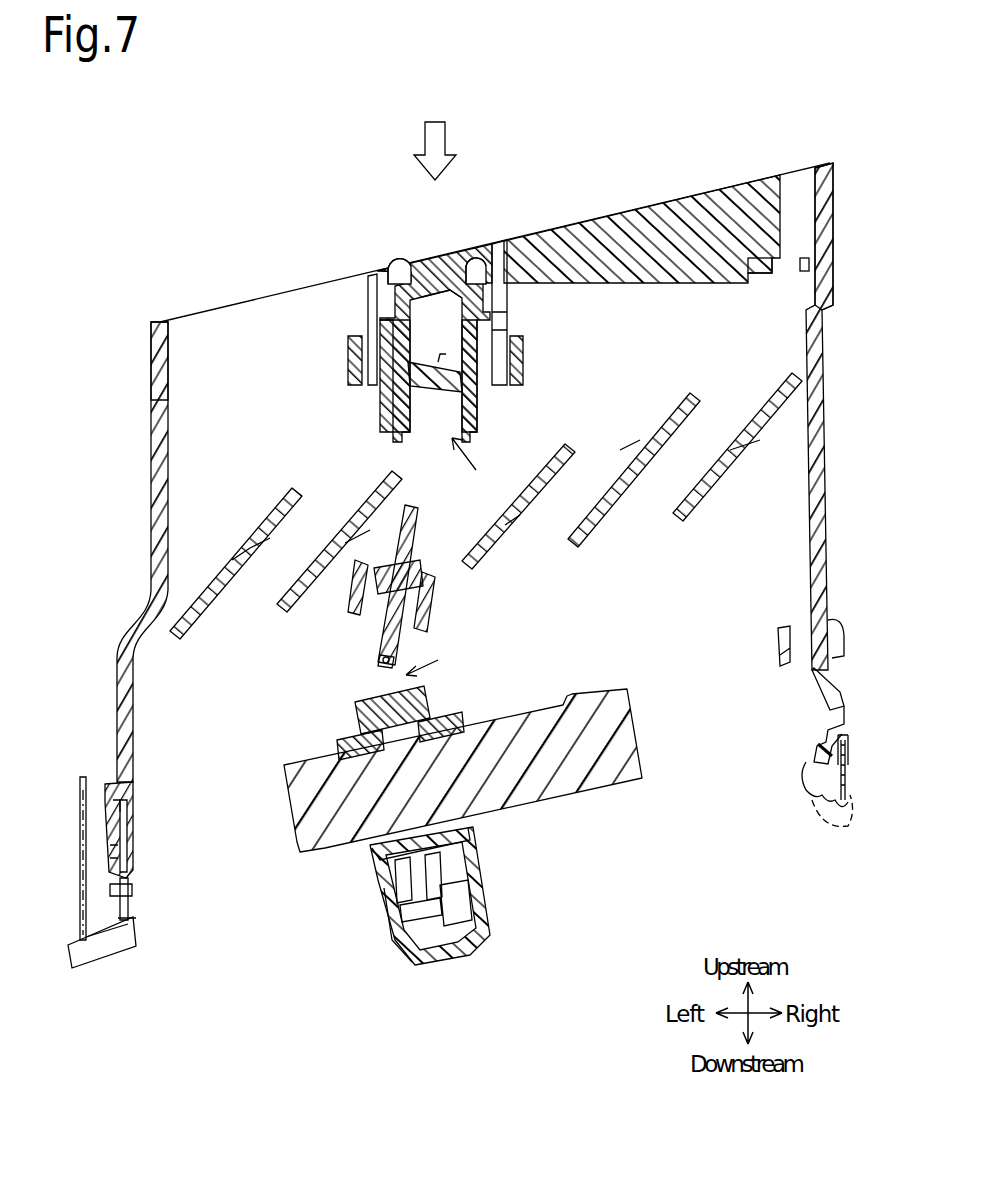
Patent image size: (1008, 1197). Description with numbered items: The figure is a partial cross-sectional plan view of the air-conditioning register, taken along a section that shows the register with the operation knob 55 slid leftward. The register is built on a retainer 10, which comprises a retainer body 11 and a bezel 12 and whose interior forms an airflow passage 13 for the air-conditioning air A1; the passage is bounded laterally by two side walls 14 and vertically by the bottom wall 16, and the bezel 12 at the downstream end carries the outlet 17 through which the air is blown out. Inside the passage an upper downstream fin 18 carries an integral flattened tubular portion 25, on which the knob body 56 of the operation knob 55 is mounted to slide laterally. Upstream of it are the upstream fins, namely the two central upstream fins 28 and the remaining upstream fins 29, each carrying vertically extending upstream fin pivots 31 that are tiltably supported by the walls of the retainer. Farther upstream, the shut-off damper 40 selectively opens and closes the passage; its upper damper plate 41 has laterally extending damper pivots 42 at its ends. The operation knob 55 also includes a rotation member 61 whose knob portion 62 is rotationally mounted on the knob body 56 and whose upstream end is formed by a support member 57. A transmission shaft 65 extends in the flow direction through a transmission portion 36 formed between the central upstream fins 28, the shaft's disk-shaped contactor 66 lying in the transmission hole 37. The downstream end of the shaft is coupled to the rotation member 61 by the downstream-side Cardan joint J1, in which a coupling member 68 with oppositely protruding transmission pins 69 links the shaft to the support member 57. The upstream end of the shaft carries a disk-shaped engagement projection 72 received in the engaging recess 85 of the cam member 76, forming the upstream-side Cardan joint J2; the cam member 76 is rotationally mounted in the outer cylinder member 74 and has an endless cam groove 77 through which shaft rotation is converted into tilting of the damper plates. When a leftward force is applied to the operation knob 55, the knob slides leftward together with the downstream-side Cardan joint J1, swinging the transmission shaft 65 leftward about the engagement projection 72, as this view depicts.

The retainer 10 is at (122, 552).
The retainer body 11 is at (158, 452).
The bezel 12 is at (98, 975).
The airflow passage 13 is at (814, 192).
The side walls 14 is at (158, 390).
The bottom wall 16 is at (190, 342).
The outlet 17 is at (152, 948).
The upper downstream fin 18 is at (468, 770).
The tubular portion 25 is at (584, 796).
The central upstream fins 28 is at (292, 608).
The upstream fins 29 is at (194, 628).
The upstream fin pivots 31 is at (268, 540).
The transmission portion 36 is at (432, 600).
The transmission hole 37 is at (360, 622).
The shut-off damper 40 is at (642, 203).
The upper damper plate 41 is at (626, 210).
The damper pivots 42 is at (762, 276).
The operation knob 55 is at (386, 948).
The knob body 56 is at (376, 862).
The support member 57 is at (418, 690).
The rotation member 61 is at (485, 896).
The knob portion 62 is at (486, 928).
The transmission shaft 65 is at (418, 510).
The contactor 66 is at (410, 576).
The coupling member 68 is at (378, 668).
The transmission pins 69 is at (322, 677).
The engagement projection 72 is at (440, 386).
The outer cylinder member 74 is at (505, 298).
The cam member 76 is at (440, 260).
The cam groove 77 is at (394, 278).
The engaging recess 85 is at (408, 398).
The air-conditioning air A1 is at (453, 130).
The downstream-side Cardan joint J1 is at (436, 660).
The upstream-side Cardan joint J2 is at (460, 464).